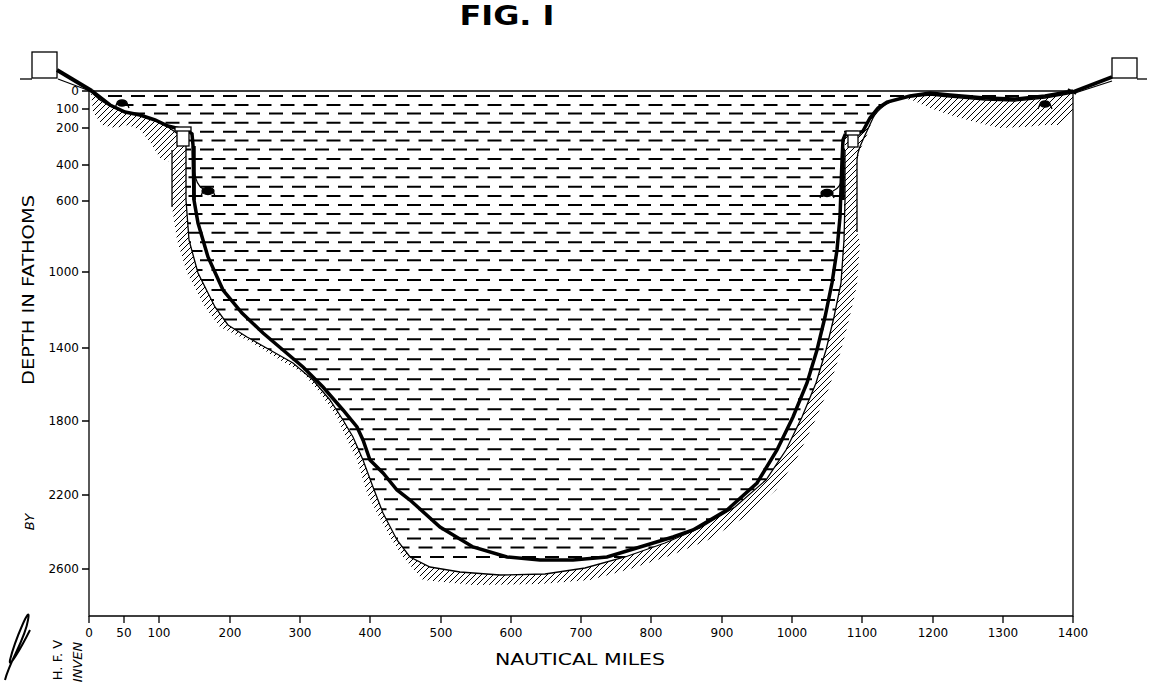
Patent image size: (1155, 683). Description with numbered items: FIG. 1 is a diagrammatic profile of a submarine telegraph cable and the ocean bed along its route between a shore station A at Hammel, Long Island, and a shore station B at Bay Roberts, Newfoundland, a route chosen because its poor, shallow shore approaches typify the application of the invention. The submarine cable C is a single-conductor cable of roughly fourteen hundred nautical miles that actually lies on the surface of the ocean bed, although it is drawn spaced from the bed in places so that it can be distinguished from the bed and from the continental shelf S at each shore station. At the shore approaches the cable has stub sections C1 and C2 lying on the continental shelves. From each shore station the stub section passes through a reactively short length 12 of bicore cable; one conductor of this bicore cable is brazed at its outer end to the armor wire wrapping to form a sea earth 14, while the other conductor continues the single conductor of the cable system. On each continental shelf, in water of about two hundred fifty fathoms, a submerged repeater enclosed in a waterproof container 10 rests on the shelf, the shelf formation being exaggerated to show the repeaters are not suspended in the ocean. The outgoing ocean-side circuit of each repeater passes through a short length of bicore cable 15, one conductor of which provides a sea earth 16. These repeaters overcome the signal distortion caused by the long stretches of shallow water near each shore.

The waterproof container 10 is at (182, 126).
The short length of bicore cable 12 is at (89, 88).
The sea earth 14 is at (120, 106).
The short length of bicore cable 15 is at (196, 151).
The sea earth 16 is at (214, 192).
The shore station A is at (42, 52).
The shore station B is at (1125, 58).
The submarine cable C is at (584, 558).
The stub section C1 is at (143, 100).
The stub section C2 is at (975, 100).
The continental shelf S is at (143, 120).